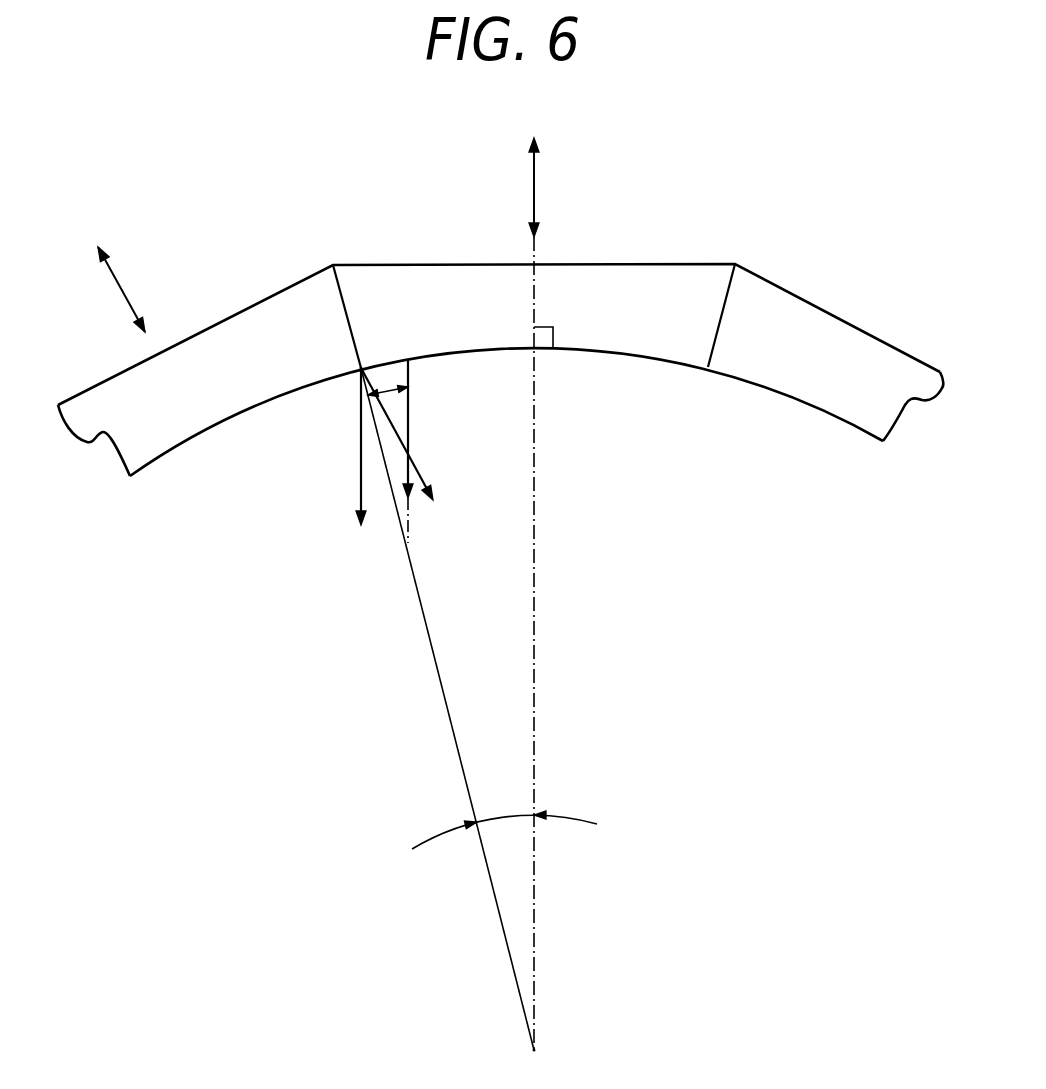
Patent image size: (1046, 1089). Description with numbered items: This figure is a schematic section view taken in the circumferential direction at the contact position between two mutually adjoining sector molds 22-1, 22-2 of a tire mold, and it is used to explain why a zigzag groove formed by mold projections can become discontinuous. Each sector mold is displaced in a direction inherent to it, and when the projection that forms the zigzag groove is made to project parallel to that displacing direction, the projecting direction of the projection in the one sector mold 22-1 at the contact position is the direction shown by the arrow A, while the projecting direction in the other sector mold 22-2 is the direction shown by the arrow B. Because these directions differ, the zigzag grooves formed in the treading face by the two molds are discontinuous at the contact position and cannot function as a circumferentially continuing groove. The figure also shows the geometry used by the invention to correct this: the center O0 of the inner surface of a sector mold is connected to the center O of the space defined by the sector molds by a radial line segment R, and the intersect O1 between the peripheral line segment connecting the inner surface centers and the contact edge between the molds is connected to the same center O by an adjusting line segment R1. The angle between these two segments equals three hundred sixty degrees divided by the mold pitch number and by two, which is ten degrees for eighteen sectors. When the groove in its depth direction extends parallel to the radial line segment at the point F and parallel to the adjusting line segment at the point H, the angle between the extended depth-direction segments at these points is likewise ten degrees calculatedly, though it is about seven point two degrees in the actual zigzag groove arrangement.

The sector mold 22-1 is at (475, 298).
The sector mold 22-2 is at (200, 370).
The center of inner surface O0 is at (536, 352).
The intersect O1 is at (358, 370).
The point H is at (373, 340).
The point F is at (408, 433).
The arrow A is at (362, 432).
The arrow B is at (420, 472).
The radial line segment R is at (533, 513).
The adjusting line segment R1 is at (452, 727).
The center of space O is at (534, 1050).